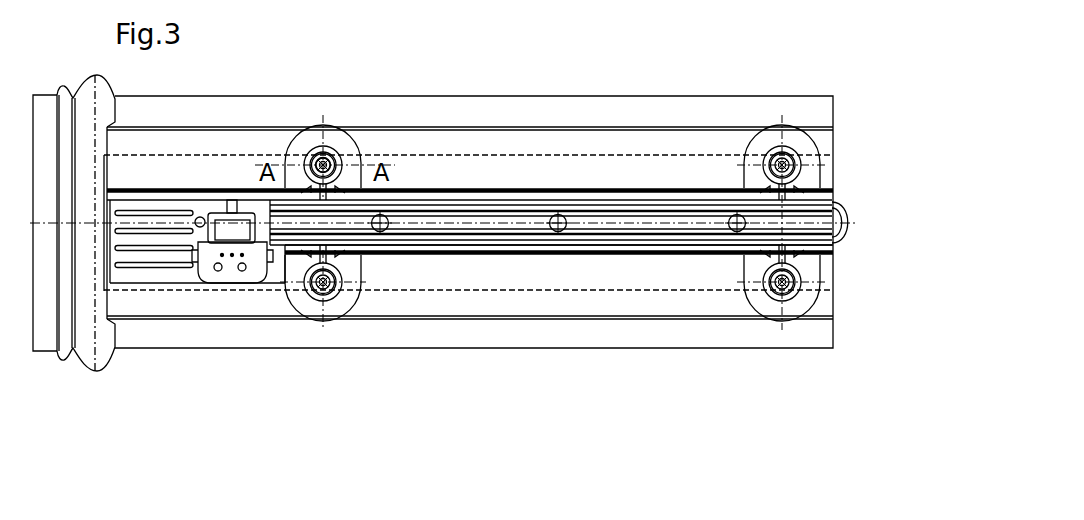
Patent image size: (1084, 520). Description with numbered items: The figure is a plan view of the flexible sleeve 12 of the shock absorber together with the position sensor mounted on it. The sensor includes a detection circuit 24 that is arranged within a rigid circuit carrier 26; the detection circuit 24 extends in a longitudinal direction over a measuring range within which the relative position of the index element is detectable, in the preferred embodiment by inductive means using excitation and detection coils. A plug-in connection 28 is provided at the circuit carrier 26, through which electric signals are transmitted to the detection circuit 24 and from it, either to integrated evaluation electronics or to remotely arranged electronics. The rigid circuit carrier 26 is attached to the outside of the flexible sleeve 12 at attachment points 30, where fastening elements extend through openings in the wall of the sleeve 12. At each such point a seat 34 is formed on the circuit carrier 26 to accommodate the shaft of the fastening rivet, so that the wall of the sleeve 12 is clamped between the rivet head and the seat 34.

The flexible sleeve 12 is at (677, 67).
The detection circuit 24 is at (559, 304).
The rigid circuit carrier 26 is at (522, 223).
The plug-in connection 28 is at (228, 272).
The attachment points 30 is at (310, 152).
The seat 34 is at (333, 150).